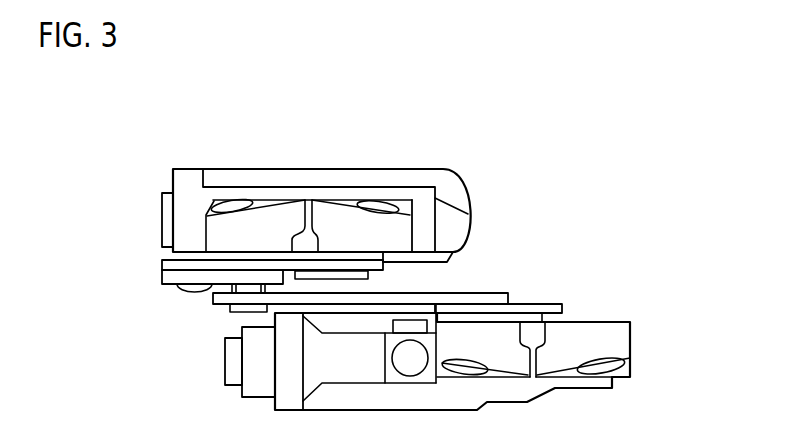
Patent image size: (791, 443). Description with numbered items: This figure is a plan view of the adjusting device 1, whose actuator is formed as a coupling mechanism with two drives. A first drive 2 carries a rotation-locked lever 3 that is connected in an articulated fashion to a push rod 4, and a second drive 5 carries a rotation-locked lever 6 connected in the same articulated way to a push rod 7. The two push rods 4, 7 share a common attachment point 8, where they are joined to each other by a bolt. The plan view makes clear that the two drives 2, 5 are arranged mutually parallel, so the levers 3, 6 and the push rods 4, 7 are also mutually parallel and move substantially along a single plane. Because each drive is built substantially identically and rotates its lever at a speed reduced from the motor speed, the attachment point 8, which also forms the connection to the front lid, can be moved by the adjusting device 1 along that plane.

The adjusting device 1 is at (419, 251).
The first drive 2 is at (445, 178).
The rotation-locked lever 3 is at (387, 268).
The push rod 4 is at (172, 282).
The second drive 5 is at (612, 340).
The rotation-locked lever 6 is at (565, 305).
The push rod 7 is at (510, 293).
The attachment point 8 is at (248, 288).